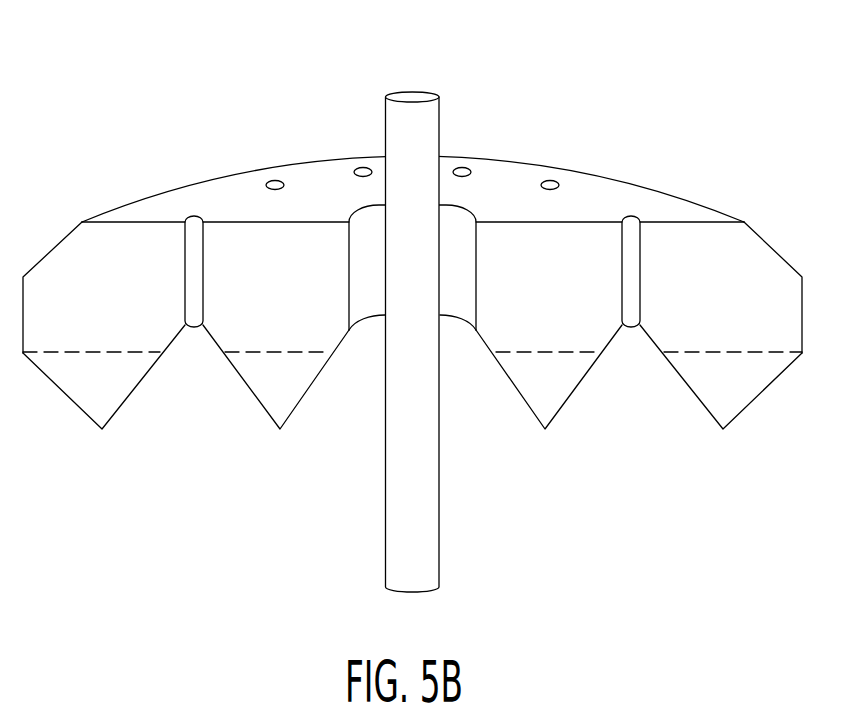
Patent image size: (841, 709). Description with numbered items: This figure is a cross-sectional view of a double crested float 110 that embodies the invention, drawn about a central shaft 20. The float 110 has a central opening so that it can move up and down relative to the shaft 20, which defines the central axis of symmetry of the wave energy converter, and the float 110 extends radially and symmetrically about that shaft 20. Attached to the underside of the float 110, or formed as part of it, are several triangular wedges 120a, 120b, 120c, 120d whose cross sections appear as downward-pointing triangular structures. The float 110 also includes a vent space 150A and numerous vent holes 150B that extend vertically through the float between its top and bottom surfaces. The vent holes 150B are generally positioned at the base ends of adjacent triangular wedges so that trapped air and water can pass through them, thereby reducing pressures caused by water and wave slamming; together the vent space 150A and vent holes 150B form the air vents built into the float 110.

The shaft 20 is at (412, 94).
The float 110 is at (765, 275).
The triangular wedge 120a is at (105, 403).
The triangular wedge 120b is at (283, 403).
The triangular wedge 120c is at (548, 403).
The triangular wedge 120d is at (720, 403).
The vent space 150A is at (462, 168).
The vent holes 150B is at (363, 168).